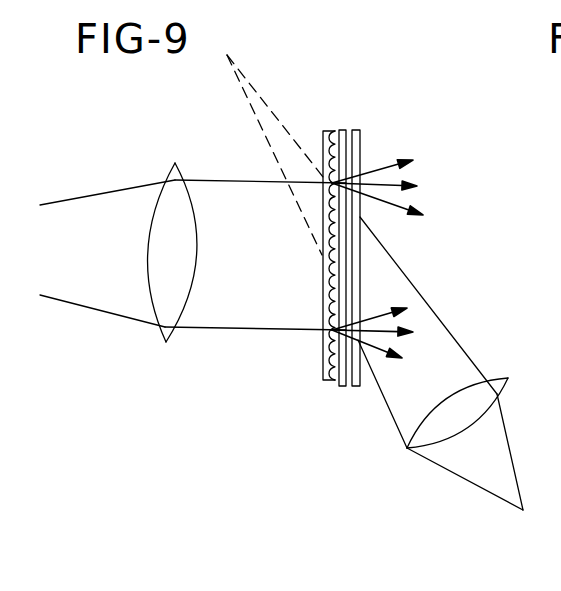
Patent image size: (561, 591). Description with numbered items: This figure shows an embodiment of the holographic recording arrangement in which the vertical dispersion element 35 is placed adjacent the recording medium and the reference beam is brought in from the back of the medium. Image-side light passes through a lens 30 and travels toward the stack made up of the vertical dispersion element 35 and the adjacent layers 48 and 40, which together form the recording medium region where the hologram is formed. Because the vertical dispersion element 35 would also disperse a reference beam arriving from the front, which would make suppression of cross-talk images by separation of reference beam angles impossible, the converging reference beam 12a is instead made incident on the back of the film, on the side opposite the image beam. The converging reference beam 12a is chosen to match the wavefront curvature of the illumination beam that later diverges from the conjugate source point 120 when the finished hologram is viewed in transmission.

The conjugate source point 120 is at (227, 52).
The collimating lens 30 is at (168, 337).
The vertical dispersion element 35 is at (317, 377).
The plate 48 is at (336, 388).
The plate 40 is at (349, 388).
The converging reference beam 12a is at (455, 337).